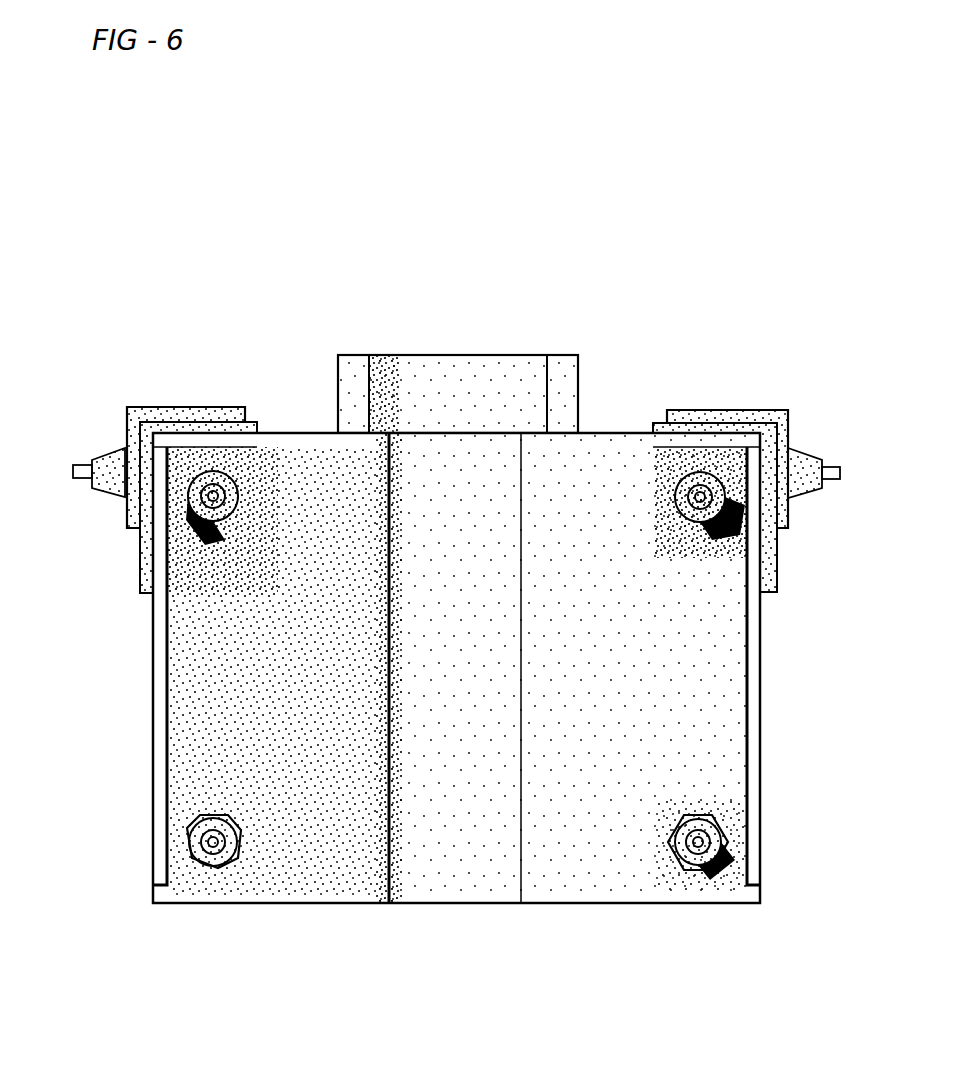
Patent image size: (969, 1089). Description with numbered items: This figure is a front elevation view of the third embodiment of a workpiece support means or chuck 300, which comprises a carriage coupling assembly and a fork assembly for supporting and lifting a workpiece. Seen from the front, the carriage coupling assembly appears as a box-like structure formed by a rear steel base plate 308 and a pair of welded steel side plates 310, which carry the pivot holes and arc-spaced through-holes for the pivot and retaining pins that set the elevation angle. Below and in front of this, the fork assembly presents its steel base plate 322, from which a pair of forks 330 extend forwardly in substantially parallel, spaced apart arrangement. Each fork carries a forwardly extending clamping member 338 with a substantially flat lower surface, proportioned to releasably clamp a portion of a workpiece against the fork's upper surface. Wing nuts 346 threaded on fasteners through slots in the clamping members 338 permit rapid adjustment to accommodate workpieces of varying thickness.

The workpiece support means or chuck 300 is at (267, 957).
The rear steel base plate 308 is at (448, 370).
The side plates 310 is at (347, 405).
The base plate 322 is at (463, 883).
The forks 330 is at (138, 553).
The clamping member 338 is at (128, 408).
The wing nuts 346 is at (93, 456).